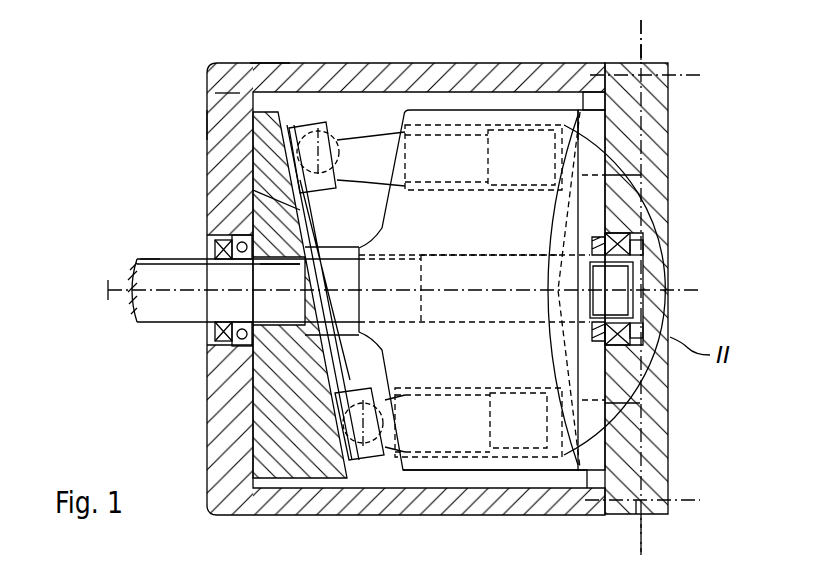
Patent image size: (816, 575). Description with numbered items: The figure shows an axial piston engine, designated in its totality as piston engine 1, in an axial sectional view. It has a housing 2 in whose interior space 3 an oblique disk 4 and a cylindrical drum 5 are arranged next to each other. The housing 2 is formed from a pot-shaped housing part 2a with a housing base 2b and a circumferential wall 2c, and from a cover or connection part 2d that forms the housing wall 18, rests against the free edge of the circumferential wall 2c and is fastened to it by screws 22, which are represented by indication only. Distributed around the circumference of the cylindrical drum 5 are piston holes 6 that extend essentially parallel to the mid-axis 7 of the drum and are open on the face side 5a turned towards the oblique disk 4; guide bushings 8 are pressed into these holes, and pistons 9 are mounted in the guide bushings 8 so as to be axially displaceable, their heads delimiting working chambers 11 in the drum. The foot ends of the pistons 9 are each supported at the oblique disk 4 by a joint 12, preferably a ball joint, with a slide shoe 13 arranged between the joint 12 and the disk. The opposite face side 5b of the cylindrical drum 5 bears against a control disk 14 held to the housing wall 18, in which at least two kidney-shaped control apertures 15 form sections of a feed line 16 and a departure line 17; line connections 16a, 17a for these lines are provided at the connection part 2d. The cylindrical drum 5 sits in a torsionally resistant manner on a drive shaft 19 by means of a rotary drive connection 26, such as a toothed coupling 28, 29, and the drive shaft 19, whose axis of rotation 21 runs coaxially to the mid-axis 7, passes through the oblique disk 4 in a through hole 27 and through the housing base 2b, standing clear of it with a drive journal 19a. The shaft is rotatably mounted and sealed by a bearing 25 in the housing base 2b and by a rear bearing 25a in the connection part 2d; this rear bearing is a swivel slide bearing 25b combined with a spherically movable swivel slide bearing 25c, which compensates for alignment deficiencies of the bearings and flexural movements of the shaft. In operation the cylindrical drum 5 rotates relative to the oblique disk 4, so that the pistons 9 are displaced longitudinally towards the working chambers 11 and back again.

The piston engine 1 is at (150, 134).
The housing 2 is at (203, 429).
The pot-shaped housing part 2a is at (207, 126).
The housing base 2b is at (220, 94).
The circumferential wall 2c is at (266, 62).
The cover or connection part 2d is at (668, 322).
The interior space 3 is at (350, 115).
The oblique disk 4 is at (275, 388).
The cylindrical drum 5 is at (519, 116).
The face side 5a is at (405, 118).
The face side 5b is at (628, 148).
The piston holes 6 is at (479, 116).
The mid-axis 7 is at (443, 262).
The guide bushings 8 is at (455, 124).
The pistons 9 is at (372, 138).
The working chambers 11 is at (511, 172).
The joint 12 is at (328, 116).
The slide shoes 13 is at (291, 133).
The control disk 14 is at (592, 108).
The control apertures 15 is at (592, 181).
The feed line 16 is at (642, 30).
The line connection 16a is at (640, 54).
The departure line 17 is at (642, 535).
The line connection 17a is at (636, 513).
The housing wall 18 is at (666, 378).
The drive shaft 19 is at (192, 322).
The drive journal 19a is at (151, 258).
The axis of rotation 21 is at (108, 292).
The screws 22 is at (690, 80).
The bearing 25 is at (226, 240).
The rear bearing 25a is at (660, 210).
The swivel slide bearing 25b is at (598, 289).
The spherically movable swivel slide bearing 25c is at (611, 290).
The rotary drive connection 26 is at (420, 255).
The through hole 27 is at (276, 265).
The toothed coupling 28 is at (254, 178).
The toothed coupling 29 is at (327, 250).